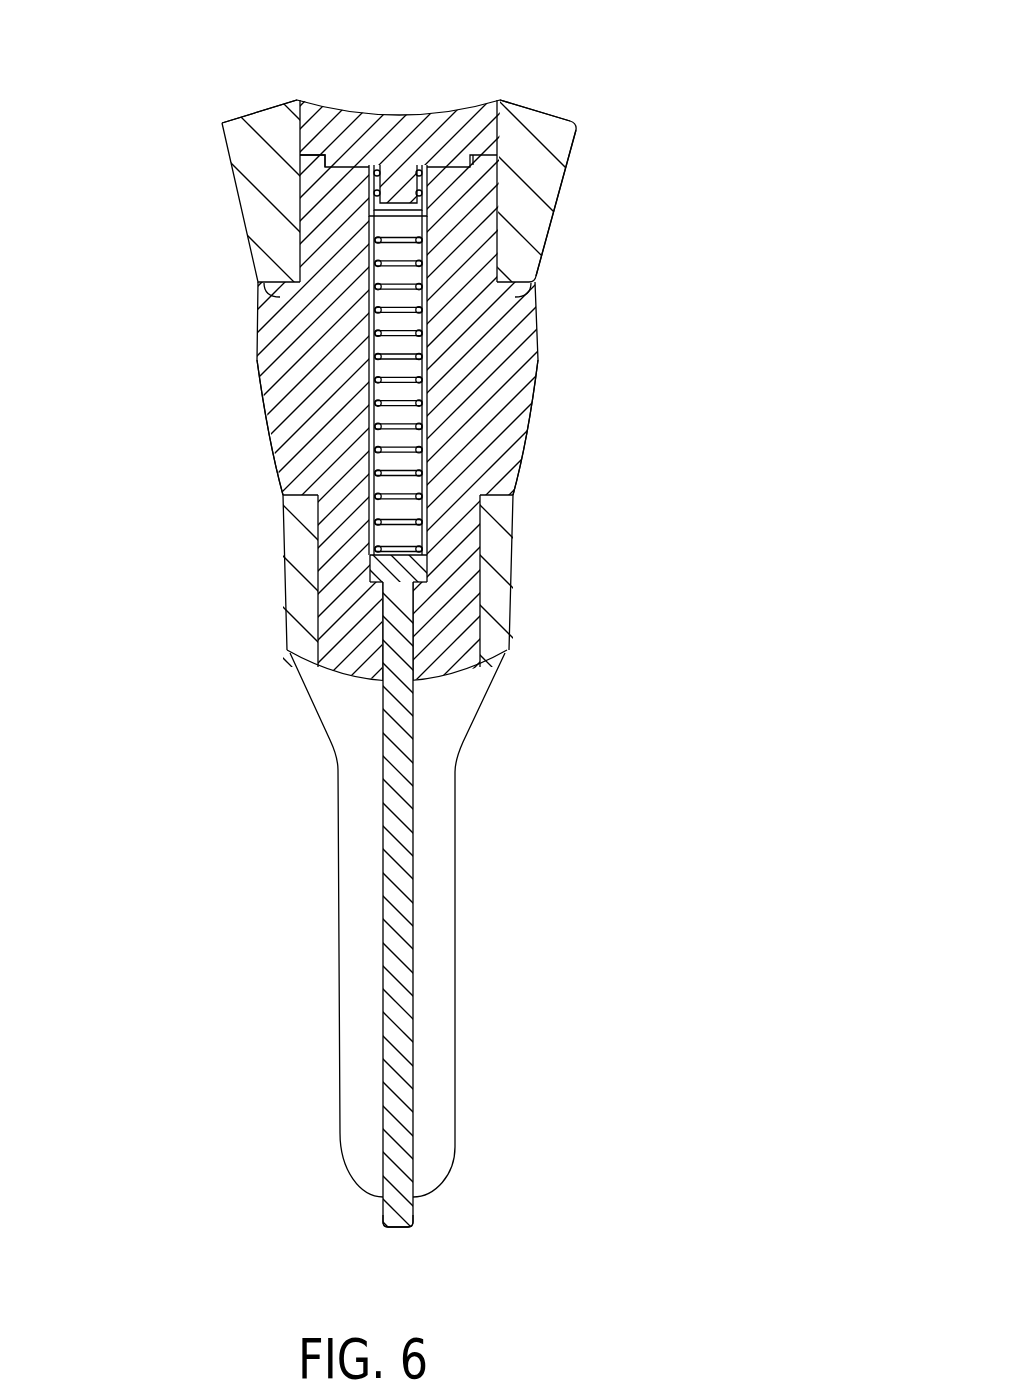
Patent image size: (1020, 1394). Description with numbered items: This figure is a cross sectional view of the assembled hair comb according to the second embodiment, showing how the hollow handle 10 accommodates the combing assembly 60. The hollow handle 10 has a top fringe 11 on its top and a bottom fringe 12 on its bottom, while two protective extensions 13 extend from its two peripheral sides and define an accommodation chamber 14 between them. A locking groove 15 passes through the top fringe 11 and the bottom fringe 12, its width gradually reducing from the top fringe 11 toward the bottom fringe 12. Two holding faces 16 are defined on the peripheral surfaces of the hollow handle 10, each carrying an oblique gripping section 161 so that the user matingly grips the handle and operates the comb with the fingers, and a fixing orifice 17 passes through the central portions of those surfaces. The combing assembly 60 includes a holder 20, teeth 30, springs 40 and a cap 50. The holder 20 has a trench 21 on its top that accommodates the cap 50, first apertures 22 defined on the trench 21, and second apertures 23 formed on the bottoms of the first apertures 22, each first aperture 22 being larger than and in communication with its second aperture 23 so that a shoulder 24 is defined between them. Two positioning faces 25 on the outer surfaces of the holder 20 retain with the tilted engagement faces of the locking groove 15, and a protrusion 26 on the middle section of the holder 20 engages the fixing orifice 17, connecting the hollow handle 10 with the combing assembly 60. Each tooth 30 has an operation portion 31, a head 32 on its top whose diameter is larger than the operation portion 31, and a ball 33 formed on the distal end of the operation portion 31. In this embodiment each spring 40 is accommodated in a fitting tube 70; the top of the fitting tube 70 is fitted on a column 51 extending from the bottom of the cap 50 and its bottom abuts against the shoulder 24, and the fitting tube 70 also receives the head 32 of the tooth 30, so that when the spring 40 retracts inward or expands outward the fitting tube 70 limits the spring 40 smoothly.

The hollow handle 10 is at (560, 575).
The top fringe 11 is at (295, 103).
The bottom fringe 12 is at (307, 660).
The protective extensions 13 is at (357, 1003).
The accommodation chamber 14 is at (437, 887).
The locking groove 15 is at (468, 158).
The holding faces 16 is at (575, 158).
The oblique gripping sections 161 is at (555, 203).
The fixing orifice 17 is at (257, 302).
The holder 20 is at (535, 380).
The trench 21 is at (340, 152).
The first apertures 22 is at (370, 345).
The second apertures 23 is at (382, 617).
The shoulder 24 is at (372, 575).
The positioning faces 25 is at (300, 518).
The protrusion 26 is at (260, 405).
The teeth 30 is at (422, 753).
The operation portion 31 is at (407, 809).
The head 32 is at (430, 557).
The ball 33 is at (403, 1230).
The springs 40 is at (400, 232).
The cap 50 is at (397, 112).
The columns 51 is at (387, 185).
The combing assembly 60 is at (499, 246).
The fitting tubes 70 is at (372, 318).